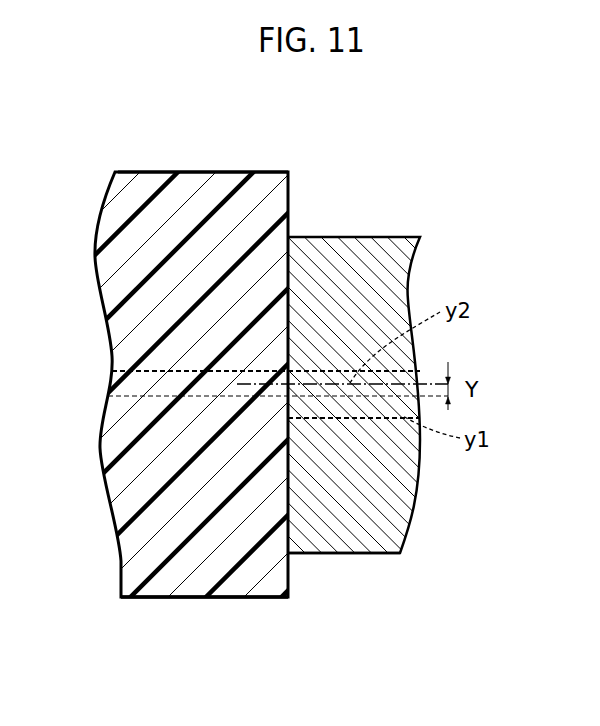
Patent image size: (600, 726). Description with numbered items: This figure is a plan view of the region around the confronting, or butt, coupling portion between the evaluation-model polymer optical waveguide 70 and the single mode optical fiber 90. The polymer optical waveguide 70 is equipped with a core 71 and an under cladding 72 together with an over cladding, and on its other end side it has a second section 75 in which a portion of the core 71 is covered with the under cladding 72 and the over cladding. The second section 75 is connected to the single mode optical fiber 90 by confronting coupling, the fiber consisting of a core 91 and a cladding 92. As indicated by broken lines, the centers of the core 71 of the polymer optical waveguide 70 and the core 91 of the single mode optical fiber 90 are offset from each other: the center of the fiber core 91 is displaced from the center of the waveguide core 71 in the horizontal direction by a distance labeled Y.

The polymer optical waveguide 70 is at (268, 155).
The second section 75 is at (205, 172).
The core 71 is at (152, 382).
The under cladding 72 is at (203, 570).
The single mode optical fiber 90 is at (373, 225).
The core 91 is at (380, 407).
The cladding 92 is at (357, 530).